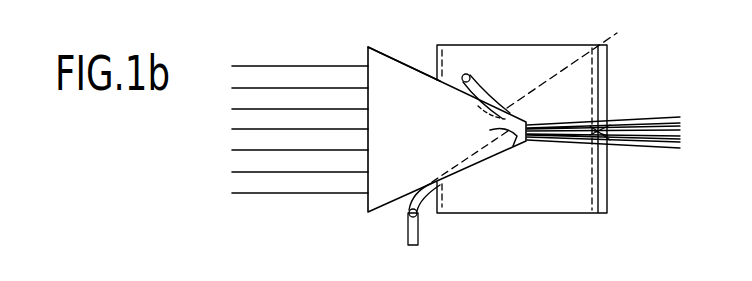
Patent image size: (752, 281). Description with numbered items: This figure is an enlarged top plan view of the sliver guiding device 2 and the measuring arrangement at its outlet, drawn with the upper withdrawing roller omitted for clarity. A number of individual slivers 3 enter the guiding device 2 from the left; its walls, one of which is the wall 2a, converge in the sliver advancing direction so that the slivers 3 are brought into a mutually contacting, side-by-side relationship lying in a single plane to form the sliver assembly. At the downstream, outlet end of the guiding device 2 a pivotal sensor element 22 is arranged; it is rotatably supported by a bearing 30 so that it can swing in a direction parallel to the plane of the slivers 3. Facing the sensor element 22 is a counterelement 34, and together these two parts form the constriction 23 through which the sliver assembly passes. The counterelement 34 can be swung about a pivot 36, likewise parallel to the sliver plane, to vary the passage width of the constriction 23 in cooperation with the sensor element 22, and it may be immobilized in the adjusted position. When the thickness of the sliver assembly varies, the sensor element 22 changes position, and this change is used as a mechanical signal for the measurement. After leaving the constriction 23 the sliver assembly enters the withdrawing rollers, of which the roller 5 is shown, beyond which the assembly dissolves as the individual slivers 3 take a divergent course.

The sliver guiding device 2 is at (405, 65).
The wall 2a is at (377, 60).
The slivers 3 is at (248, 129).
The withdrawing roller 5 is at (572, 192).
The sensor element 22 is at (418, 215).
The constriction 23 is at (518, 146).
The bearing 30 is at (410, 215).
The counterelement 34 is at (579, 64).
The pivot 36 is at (470, 77).